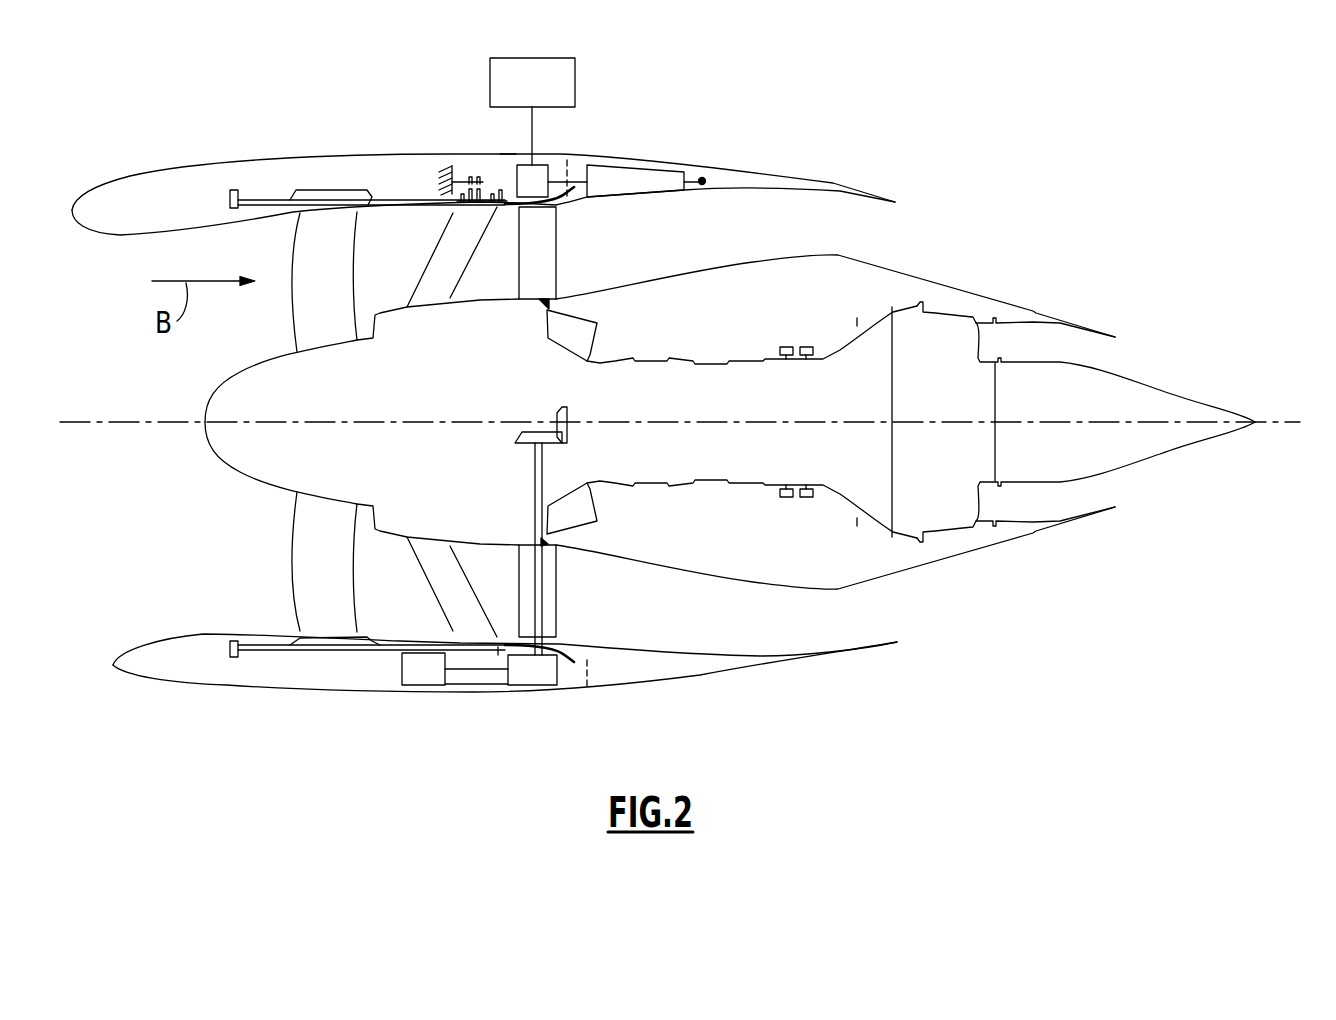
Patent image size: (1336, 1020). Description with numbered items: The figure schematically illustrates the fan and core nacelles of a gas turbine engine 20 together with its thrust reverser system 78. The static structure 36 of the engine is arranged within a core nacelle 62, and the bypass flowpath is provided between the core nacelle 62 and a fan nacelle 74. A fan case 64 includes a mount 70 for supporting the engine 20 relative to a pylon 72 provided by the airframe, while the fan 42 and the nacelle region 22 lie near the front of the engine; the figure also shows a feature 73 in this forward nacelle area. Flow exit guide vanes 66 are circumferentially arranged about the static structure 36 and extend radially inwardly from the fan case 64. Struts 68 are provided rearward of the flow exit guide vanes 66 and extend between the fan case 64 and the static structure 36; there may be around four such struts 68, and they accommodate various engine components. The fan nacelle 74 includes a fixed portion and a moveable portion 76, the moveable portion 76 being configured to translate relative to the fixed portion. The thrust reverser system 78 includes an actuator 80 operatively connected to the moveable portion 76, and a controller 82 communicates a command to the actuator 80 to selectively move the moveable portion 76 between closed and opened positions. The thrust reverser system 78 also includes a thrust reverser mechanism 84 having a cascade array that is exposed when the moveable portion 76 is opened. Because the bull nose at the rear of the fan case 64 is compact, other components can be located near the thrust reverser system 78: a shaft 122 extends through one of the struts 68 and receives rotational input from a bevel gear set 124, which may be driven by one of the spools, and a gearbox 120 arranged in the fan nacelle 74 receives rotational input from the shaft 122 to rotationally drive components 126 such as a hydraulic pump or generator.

The engine 20 is at (760, 92).
The fan nacelle 22 is at (306, 170).
The static structure 36 is at (755, 356).
The fan 42 is at (338, 301).
The core nacelle 62 is at (872, 262).
The fan case 64 is at (358, 655).
The flow exit guide vanes 66 is at (447, 261).
The struts 68 is at (543, 265).
The mount 70 is at (479, 183).
The pylon 72 is at (457, 177).
The hinge 73 is at (508, 156).
The fan nacelle 74 is at (492, 691).
The moveable portion 76 is at (706, 180).
The thrust reverser system 78 is at (590, 150).
The actuator 80 is at (537, 178).
The controller 82 is at (547, 94).
The thrust reverser mechanism 84 is at (632, 176).
The gearbox 120 is at (547, 684).
The shaft 122 is at (548, 530).
The bevel gear set 124 is at (569, 441).
The components 126 is at (423, 678).